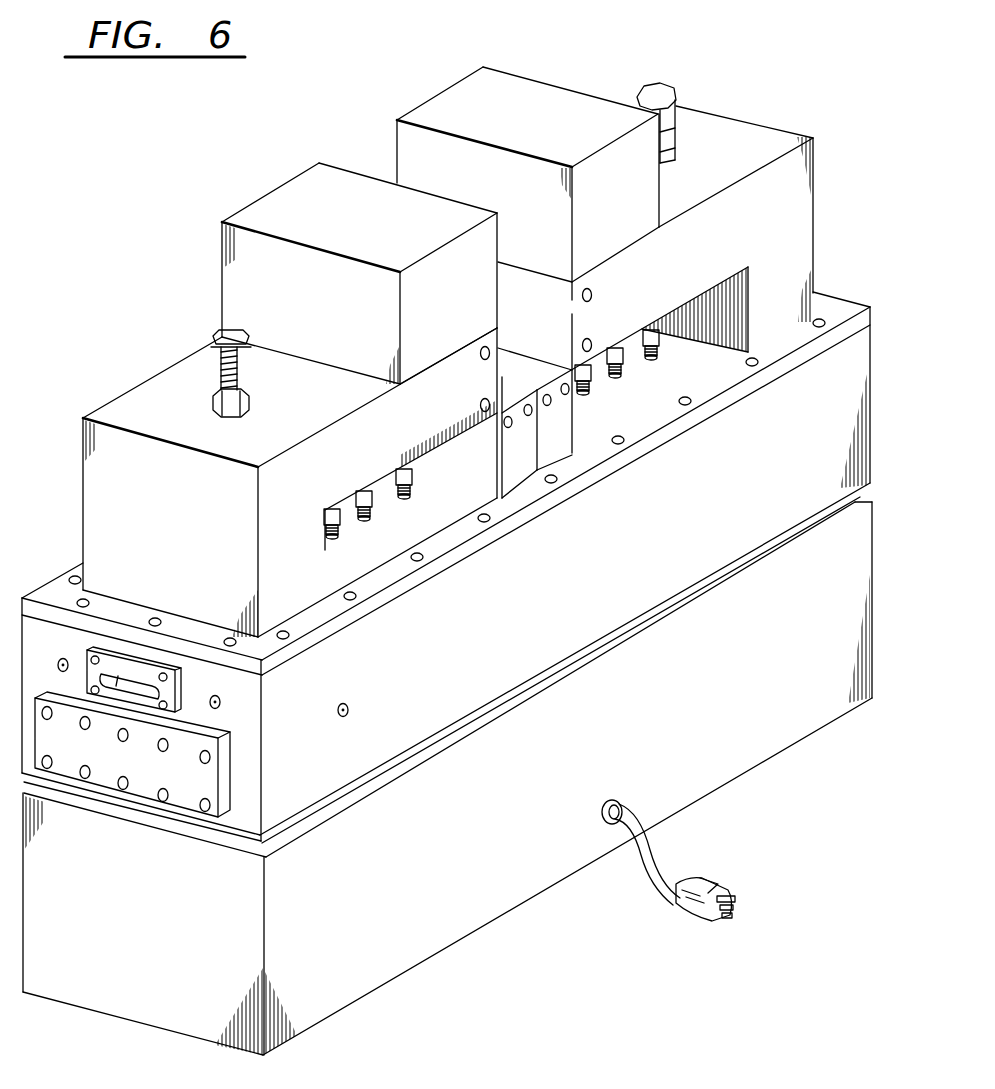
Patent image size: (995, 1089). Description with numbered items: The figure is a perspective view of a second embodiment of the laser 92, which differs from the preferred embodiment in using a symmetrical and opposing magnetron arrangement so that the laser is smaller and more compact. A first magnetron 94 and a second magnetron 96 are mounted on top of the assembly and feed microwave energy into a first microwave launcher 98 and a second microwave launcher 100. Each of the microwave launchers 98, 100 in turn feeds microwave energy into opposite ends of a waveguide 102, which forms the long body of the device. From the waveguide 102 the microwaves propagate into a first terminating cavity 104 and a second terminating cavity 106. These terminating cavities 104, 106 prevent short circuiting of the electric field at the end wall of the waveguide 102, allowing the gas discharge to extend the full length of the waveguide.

The laser 92 is at (165, 215).
The first magnetron 94 is at (442, 105).
The second magnetron 96 is at (297, 192).
The first microwave launcher 98 is at (742, 135).
The second microwave launcher 100 is at (132, 402).
The waveguide 102 is at (690, 527).
The first terminating cavity 104 is at (563, 433).
The second terminating cavity 106 is at (522, 467).